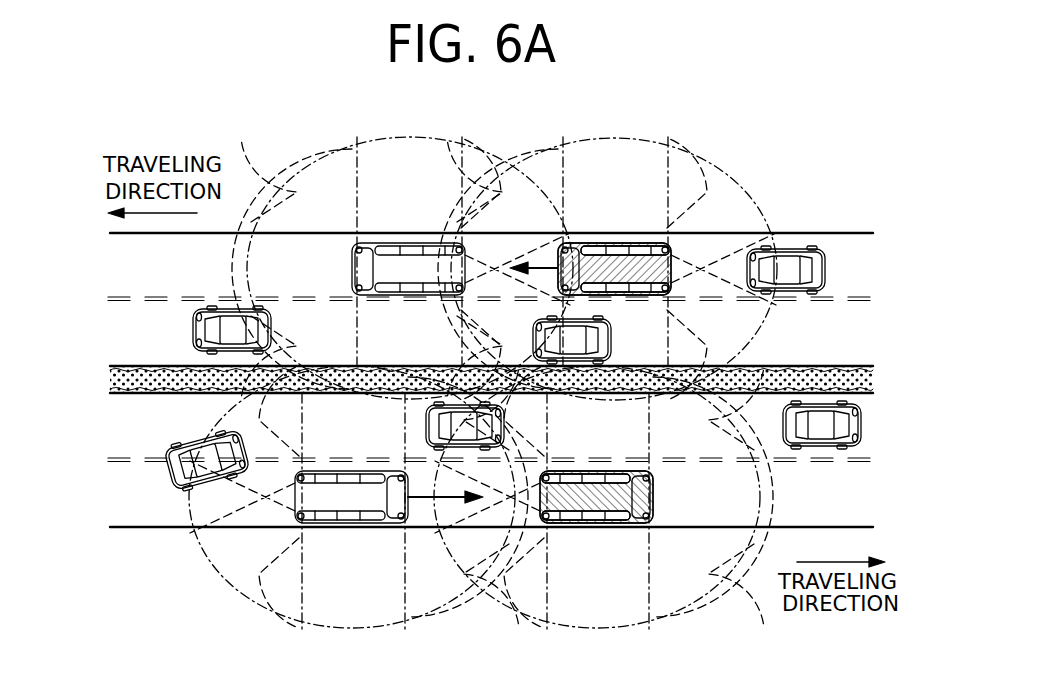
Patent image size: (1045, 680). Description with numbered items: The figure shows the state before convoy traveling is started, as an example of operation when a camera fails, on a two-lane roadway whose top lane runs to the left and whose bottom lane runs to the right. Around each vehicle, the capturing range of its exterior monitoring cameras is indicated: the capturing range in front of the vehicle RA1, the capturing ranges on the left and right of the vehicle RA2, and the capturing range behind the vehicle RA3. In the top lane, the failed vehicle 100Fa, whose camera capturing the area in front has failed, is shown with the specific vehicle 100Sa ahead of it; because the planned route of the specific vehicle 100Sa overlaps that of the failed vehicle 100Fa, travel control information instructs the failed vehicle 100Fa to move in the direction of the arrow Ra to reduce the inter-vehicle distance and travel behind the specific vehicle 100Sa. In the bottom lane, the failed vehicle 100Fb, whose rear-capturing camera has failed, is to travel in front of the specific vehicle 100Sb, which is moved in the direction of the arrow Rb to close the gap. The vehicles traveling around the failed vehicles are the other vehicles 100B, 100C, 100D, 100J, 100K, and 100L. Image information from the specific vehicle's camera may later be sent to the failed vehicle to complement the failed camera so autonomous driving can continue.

The capturing range in front of the vehicle RA1 is at (246, 262).
The capturing ranges on the left and right of the vehicle RA2 is at (247, 290).
The capturing range behind the vehicle RA3 is at (553, 205).
The arrow Ra is at (542, 258).
The arrow Rb is at (420, 530).
The specific vehicle 100Sa is at (385, 242).
The failed vehicle 100Fa is at (633, 242).
The specific vehicle 100Sb is at (338, 524).
The failed vehicle 100Fb is at (606, 525).
The vehicle traveling around the failed vehicle 100B is at (193, 328).
The vehicle traveling around the failed vehicle 100C is at (612, 338).
The vehicle traveling around the failed vehicle 100D is at (800, 254).
The vehicle traveling around the failed vehicle 100J is at (172, 476).
The vehicle traveling around the failed vehicle 100K is at (428, 426).
The vehicle traveling around the failed vehicle 100L is at (862, 423).